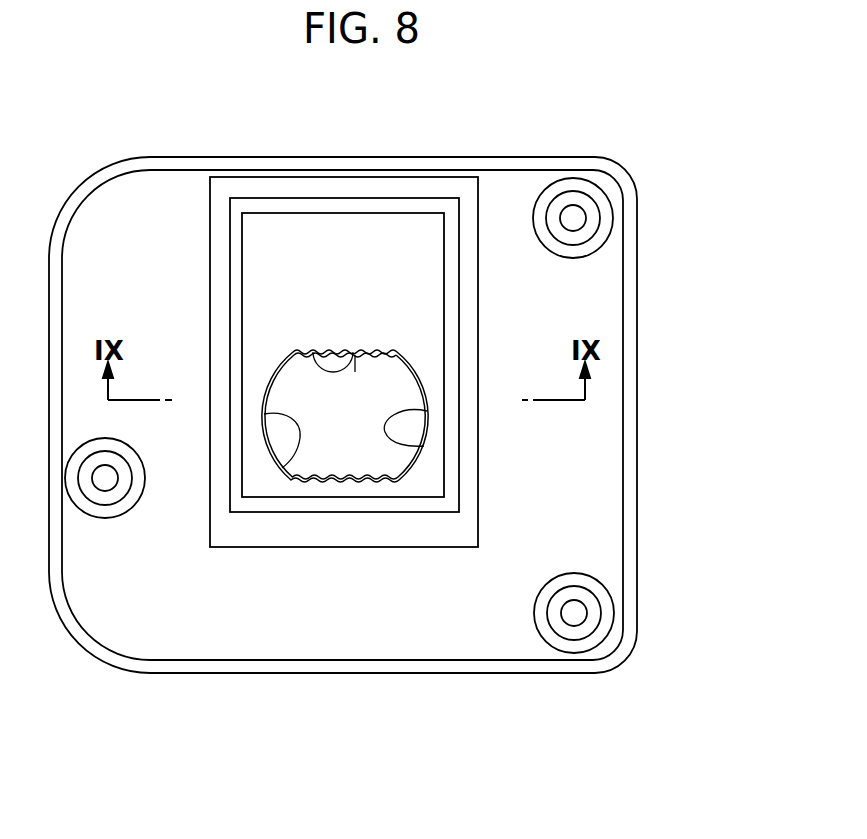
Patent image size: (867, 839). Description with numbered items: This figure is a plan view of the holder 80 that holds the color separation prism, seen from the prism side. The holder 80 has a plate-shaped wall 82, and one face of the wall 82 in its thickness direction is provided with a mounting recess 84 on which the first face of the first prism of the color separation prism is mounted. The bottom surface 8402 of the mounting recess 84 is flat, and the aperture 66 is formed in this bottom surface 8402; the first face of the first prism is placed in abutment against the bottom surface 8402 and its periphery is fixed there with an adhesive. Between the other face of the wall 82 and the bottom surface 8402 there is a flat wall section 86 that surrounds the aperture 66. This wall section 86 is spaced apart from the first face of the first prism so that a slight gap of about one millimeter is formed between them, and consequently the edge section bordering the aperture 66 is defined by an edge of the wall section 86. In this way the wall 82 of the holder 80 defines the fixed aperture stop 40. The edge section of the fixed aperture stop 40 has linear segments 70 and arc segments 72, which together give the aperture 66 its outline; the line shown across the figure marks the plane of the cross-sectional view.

The holder 80 is at (343, 371).
The wall 82 is at (187, 161).
The mounting recess 84 is at (475, 362).
The bottom surface 8402 is at (645, 285).
The wall section 86 is at (403, 488).
The fixed aperture stop 40 is at (428, 487).
The linear segments 70 is at (316, 352).
The arc segments 72 is at (397, 411).
The aperture 66 is at (297, 440).